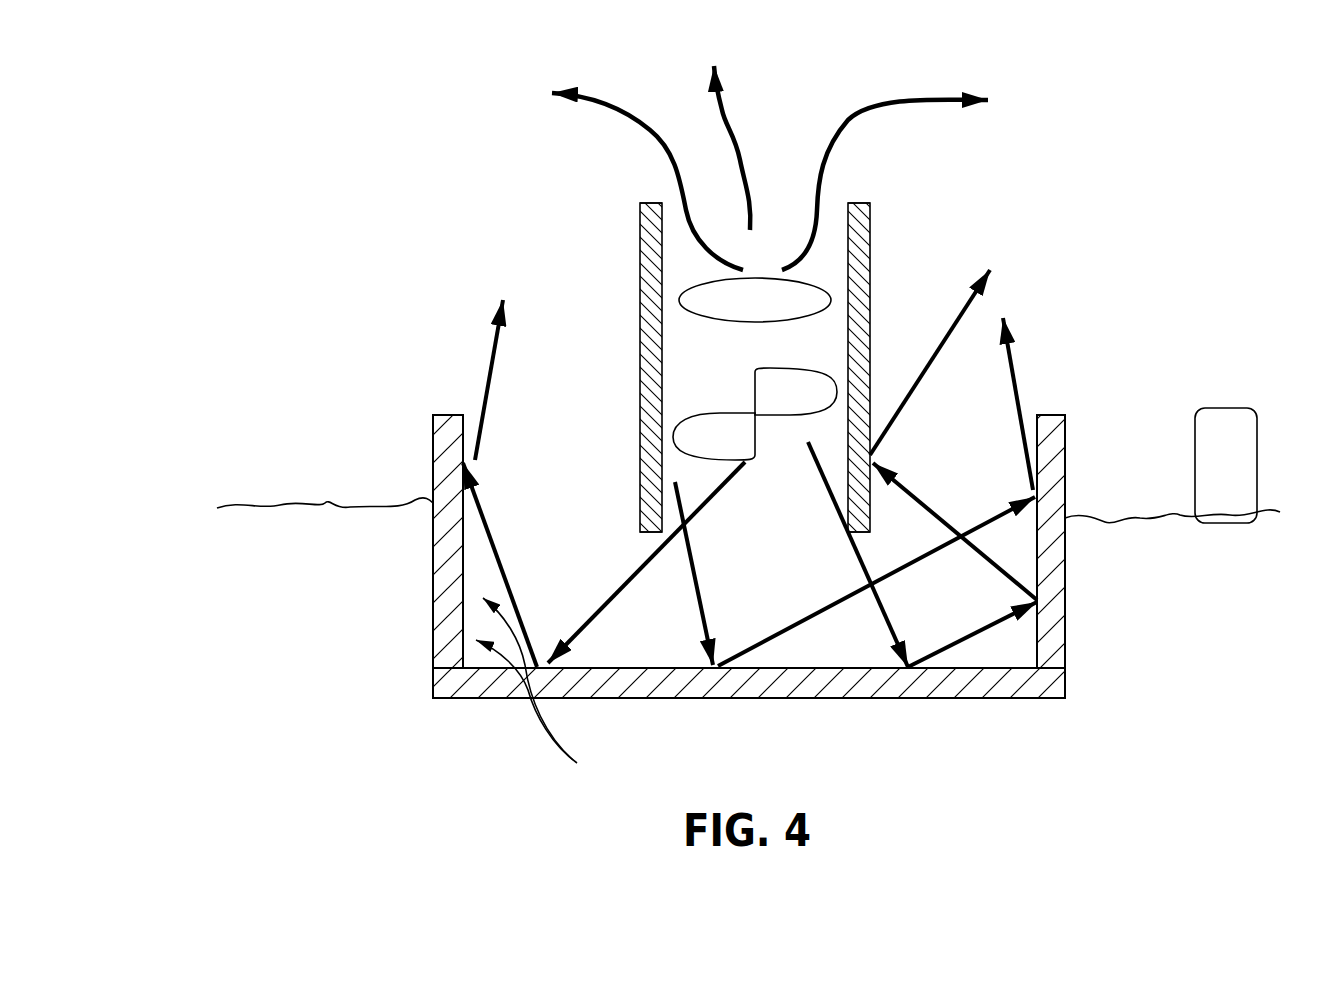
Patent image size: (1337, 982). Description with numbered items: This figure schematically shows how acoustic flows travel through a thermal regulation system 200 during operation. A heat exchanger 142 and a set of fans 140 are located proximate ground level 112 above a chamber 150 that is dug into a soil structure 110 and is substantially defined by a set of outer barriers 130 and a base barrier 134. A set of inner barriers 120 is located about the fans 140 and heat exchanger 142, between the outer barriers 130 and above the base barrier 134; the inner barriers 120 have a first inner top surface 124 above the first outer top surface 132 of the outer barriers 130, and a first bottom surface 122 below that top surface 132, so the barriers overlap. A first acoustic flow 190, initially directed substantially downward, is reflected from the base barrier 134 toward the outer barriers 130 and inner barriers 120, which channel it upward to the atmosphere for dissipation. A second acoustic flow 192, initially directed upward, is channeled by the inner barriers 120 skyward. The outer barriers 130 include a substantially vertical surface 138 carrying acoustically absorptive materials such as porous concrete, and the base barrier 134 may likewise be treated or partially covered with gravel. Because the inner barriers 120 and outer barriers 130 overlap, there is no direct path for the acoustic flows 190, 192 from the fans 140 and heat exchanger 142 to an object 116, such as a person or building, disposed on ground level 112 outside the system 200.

The thermal regulation system 200 is at (348, 180).
The second acoustic flow 192 is at (820, 163).
The first inner top surface 124 is at (648, 203).
The set of inner barriers 120 is at (640, 347).
The first bottom surface 122 is at (642, 520).
The heat exchanger 142 is at (735, 314).
The set of fans 140 is at (780, 372).
The first outer top surface 132 is at (457, 415).
The set of outer barriers 130 is at (447, 468).
The base barrier 134 is at (930, 700).
The ground level 112 is at (292, 508).
The soil structure 110 is at (1142, 656).
The object 116 is at (1208, 482).
The first acoustic flow 190 is at (570, 640).
The chamber 150 is at (733, 602).
The surface 138 is at (552, 686).